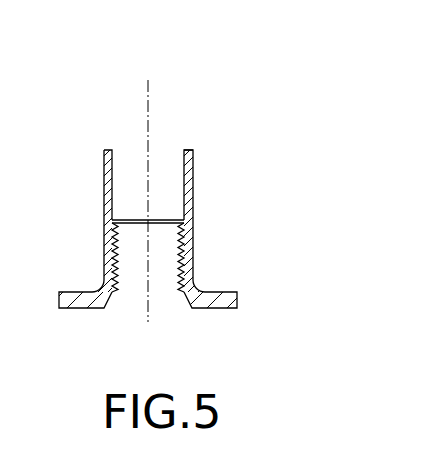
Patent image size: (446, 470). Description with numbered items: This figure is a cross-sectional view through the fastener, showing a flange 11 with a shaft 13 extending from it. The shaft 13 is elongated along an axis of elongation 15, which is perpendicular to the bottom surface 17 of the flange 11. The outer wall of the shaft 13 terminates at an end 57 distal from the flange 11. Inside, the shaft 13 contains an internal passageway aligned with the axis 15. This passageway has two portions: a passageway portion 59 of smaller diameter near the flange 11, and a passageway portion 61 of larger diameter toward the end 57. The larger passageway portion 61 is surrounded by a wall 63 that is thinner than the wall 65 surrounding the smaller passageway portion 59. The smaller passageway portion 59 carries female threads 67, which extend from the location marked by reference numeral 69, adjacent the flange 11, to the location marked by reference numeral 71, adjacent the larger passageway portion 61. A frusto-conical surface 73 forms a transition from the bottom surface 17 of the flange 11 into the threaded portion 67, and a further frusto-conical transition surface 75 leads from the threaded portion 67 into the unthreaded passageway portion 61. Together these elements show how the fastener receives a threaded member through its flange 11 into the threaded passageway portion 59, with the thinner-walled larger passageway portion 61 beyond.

The flange 11 is at (238, 301).
The shaft 13 is at (108, 186).
The axis of elongation 15 is at (148, 95).
The bottom surface 17 is at (203, 309).
The end 57 is at (190, 150).
The passageway portion 59 is at (170, 258).
The passageway portion 61 is at (140, 167).
The wall 63 is at (111, 165).
The wall 65 is at (113, 280).
The female threads 67 is at (112, 240).
The reference point 69 is at (143, 300).
The reference point 71 is at (113, 222).
The frusto-conical surface 73 is at (107, 296).
The frusto-conical transition surface 75 is at (183, 210).